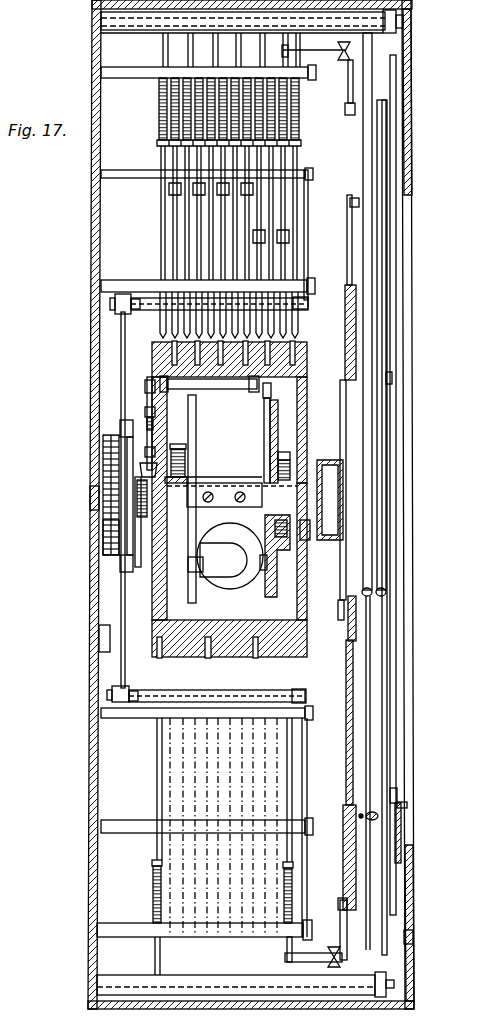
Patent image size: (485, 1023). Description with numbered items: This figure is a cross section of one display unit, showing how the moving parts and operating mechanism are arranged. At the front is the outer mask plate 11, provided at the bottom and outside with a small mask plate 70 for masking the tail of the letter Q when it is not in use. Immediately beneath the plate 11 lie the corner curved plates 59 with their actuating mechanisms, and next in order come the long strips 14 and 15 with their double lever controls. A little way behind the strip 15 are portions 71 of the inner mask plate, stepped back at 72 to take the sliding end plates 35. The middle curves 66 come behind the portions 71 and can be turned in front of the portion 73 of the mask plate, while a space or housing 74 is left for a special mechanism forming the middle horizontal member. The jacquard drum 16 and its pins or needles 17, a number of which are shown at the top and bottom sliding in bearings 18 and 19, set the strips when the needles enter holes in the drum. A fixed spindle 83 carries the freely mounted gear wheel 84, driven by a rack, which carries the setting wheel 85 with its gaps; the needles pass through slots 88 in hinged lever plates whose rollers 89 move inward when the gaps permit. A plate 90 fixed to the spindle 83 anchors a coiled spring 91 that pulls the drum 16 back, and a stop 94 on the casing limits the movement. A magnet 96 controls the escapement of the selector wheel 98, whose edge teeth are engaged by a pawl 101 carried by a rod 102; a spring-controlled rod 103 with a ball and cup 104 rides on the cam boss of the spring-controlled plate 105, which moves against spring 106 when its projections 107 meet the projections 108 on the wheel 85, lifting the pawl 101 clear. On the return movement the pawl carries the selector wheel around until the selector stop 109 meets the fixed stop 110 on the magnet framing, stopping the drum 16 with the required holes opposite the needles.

The outer mask plate 11 is at (411, 27).
The long strip 14 is at (390, 250).
The long strip 15 is at (400, 345).
The jacquard drum 16 is at (296, 640).
The rod or needle 17 is at (163, 222).
The bearing 18 is at (305, 285).
The bearing 19 is at (302, 72).
The sliding end plate 35 is at (358, 203).
The corner curved plate 59 is at (408, 165).
The single middle curve 66 is at (345, 315).
The small mask plate 70 is at (413, 948).
The inner mask plate portion 71 is at (392, 377).
The stepped back portion 72 is at (347, 240).
The mask plate portion 73 is at (345, 425).
The space or housing 74 is at (330, 488).
The fixed spindle 83 is at (90, 498).
The gear wheel 84 is at (107, 537).
The setting wheel 85 is at (121, 393).
The slot 88 is at (306, 308).
The roller 89 is at (123, 296).
The plate 90 is at (196, 428).
The coiled spring 91 is at (185, 462).
The stop 94 is at (100, 635).
The magnet 96 is at (250, 580).
The selector wheel 98 is at (300, 430).
The pawl 101 is at (272, 392).
The rod 102 is at (230, 387).
The spring-controlled rod 103 is at (157, 433).
The ball and cup 104 is at (187, 477).
The spring-controlled plate 105 is at (105, 457).
The spring 106 is at (138, 567).
The projection 107 is at (128, 425).
The projection 108 is at (132, 405).
The selector stop 109 is at (278, 562).
The fixed stop 110 is at (243, 545).